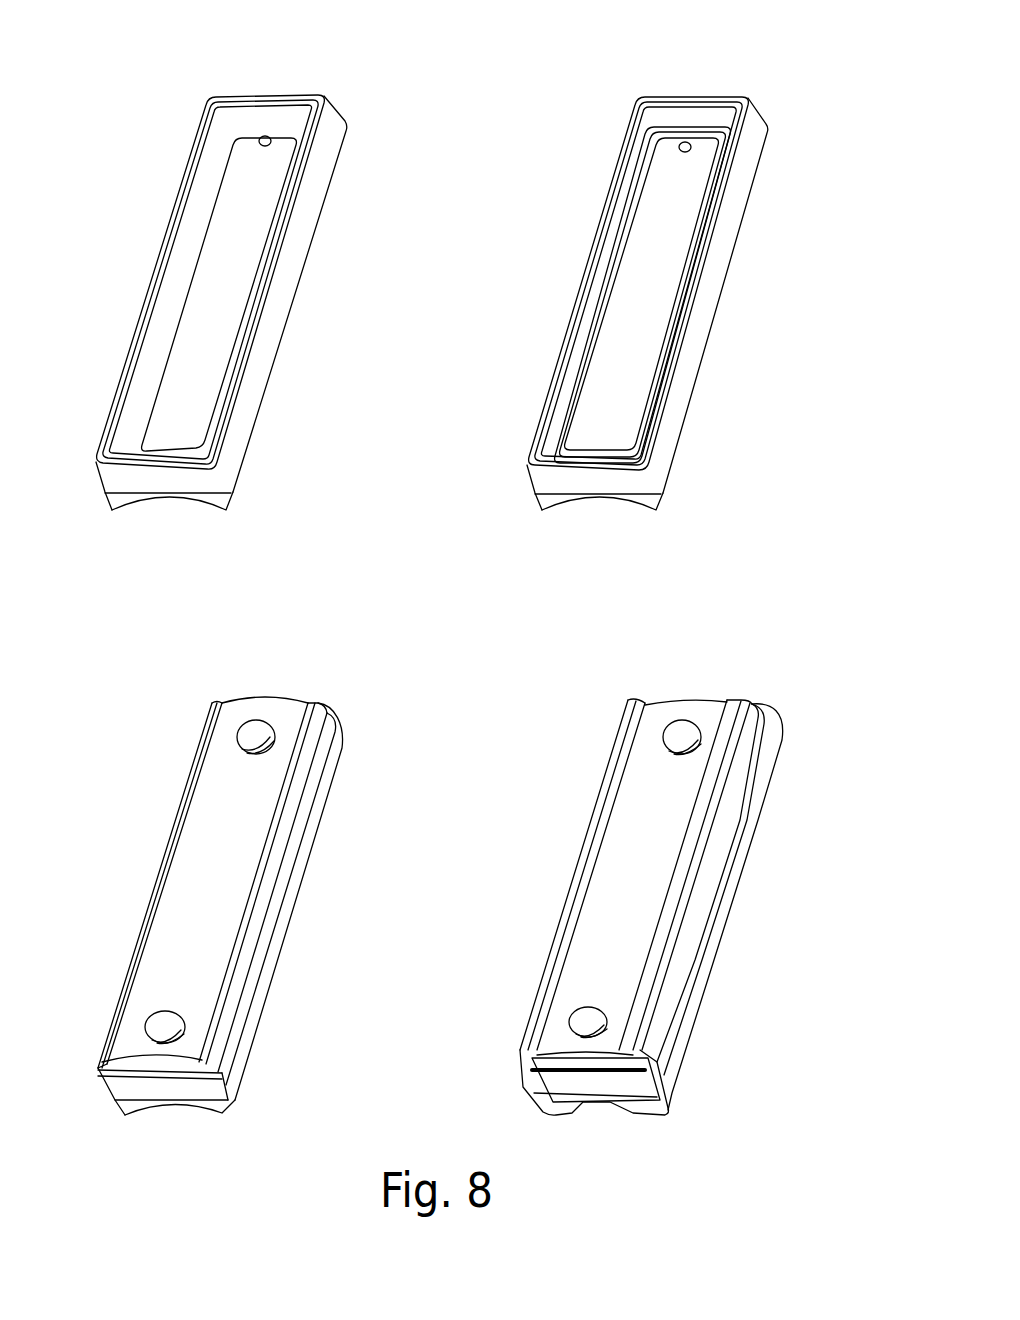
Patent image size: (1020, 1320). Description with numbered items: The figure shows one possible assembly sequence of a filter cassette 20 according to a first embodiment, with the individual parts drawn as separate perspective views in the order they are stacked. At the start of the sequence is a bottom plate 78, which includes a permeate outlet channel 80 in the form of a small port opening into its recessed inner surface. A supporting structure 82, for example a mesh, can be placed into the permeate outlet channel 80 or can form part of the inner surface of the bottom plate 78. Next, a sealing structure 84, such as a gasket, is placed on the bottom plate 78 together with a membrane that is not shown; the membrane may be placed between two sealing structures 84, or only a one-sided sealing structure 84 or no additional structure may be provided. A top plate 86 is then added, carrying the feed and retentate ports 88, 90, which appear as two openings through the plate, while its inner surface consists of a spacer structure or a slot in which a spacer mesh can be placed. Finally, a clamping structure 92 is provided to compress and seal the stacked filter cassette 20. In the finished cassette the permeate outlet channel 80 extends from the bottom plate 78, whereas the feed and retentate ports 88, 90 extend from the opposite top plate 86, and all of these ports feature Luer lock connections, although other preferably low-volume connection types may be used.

The filter cassette 20 is at (708, 1080).
The bottom plate 78 is at (261, 263).
The permeate outlet channel 80 is at (266, 136).
The supporting structure 82 is at (207, 380).
The sealing structure 84 is at (722, 119).
The top plate 86 is at (243, 906).
The feed port 88 is at (257, 747).
The retentate port 90 is at (168, 1037).
The clamping structure 92 is at (674, 883).